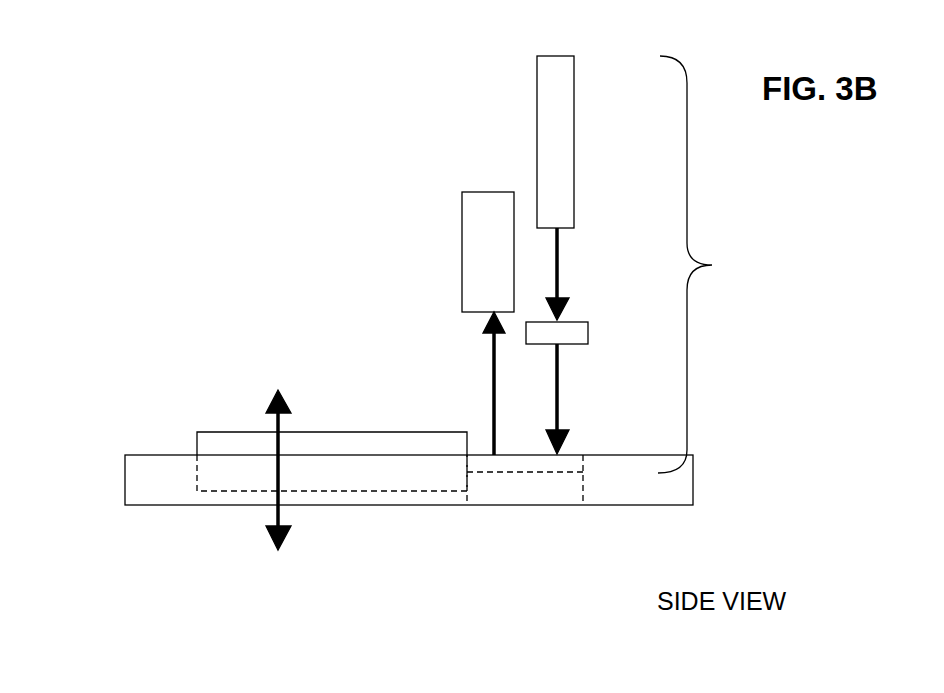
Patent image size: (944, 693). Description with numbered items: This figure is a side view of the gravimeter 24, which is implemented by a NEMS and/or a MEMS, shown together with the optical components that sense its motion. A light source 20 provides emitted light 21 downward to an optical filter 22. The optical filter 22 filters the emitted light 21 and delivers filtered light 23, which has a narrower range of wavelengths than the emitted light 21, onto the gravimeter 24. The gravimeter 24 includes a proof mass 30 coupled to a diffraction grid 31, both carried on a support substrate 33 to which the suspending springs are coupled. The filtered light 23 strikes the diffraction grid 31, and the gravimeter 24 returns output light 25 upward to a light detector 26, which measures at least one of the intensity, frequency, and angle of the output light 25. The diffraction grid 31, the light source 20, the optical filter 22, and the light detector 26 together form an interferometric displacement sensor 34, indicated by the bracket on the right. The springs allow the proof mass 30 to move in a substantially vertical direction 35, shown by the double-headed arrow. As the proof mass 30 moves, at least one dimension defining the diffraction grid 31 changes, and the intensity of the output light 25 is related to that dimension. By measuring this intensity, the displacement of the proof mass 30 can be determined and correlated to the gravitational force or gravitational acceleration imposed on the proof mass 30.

The light source 20 is at (553, 167).
The emitted light 21 is at (561, 270).
The optical filter 22 is at (588, 333).
The filtered light 23 is at (562, 398).
The gravimeter 24 is at (292, 271).
The output light 25 is at (490, 398).
The light detector 26 is at (488, 268).
The proof mass 30 is at (233, 446).
The diffraction grid 31 is at (522, 465).
The support substrate 33 is at (148, 479).
The interferometric displacement sensor 34 is at (710, 264).
The substantially vertical direction 35 is at (273, 513).